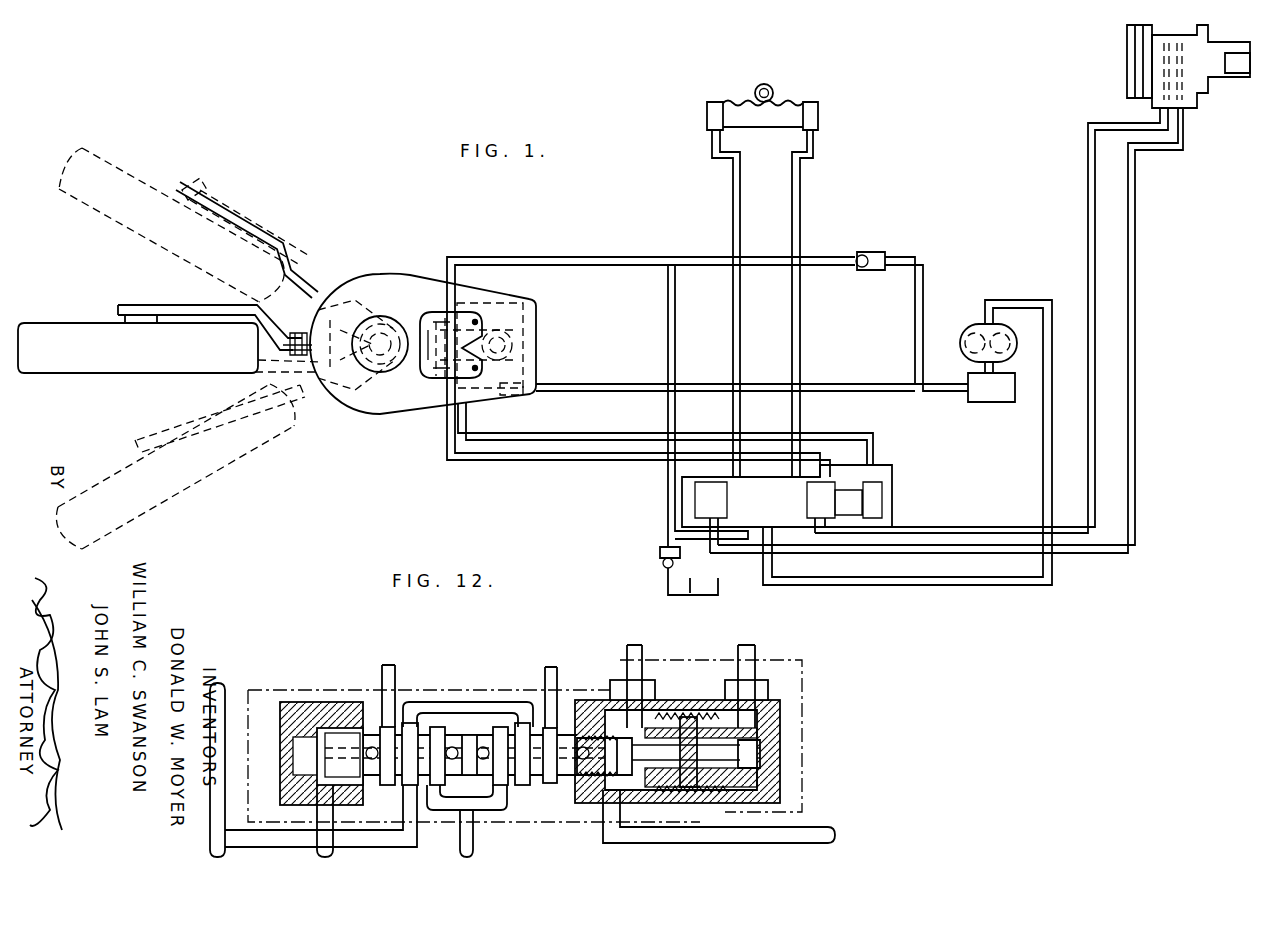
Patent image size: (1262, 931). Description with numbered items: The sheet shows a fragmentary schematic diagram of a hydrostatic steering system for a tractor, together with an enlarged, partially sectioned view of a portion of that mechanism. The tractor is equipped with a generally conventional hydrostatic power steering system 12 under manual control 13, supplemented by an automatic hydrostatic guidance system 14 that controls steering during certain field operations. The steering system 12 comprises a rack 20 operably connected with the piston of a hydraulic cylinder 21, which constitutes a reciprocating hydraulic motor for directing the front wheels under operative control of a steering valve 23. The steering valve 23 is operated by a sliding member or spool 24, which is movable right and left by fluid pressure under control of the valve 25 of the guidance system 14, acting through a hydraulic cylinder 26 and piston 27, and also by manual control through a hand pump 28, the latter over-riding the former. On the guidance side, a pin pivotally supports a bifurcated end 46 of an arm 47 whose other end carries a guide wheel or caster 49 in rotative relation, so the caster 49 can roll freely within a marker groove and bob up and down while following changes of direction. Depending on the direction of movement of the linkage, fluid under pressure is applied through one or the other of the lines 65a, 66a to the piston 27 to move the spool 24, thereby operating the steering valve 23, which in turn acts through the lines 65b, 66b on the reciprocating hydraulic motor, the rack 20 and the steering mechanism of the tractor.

In FIG. 1, the hydrostatic power steering system 12 is at (824, 176).
In FIG. 1, the manual control 13 is at (1198, 100).
In FIG. 1, the automatic hydrostatic guidance system 14 is at (360, 422).
In FIG. 1, the rack 20 is at (789, 101).
In FIG. 1, the hydraulic cylinder 21 is at (701, 120).
In FIG. 1, the steering valve 23 is at (682, 497).
In FIG. 12, the steering valve 23 is at (418, 690).
In FIG. 12, the sliding member or spool 24 is at (455, 730).
In FIG. 1, the valve 25 is at (428, 301).
In FIG. 1, the hydraulic cylinder 26 is at (882, 498).
In FIG. 12, the hydraulic cylinder 26 is at (697, 715).
In FIG. 12, the piston 27 is at (700, 797).
In FIG. 1, the hand pump 28 is at (1242, 76).
In FIG. 1, the bifurcated end 46 is at (312, 326).
In FIG. 1, the arm 47 is at (196, 305).
In FIG. 1, the guide wheel or caster 49 is at (59, 322).
In FIG. 1, the line 65a is at (479, 462).
In FIG. 12, the line 65a is at (635, 645).
In FIG. 1, the line 65b is at (733, 342).
In FIG. 12, the line 65b is at (389, 665).
In FIG. 1, the line 66a is at (507, 437).
In FIG. 12, the line 66a is at (753, 645).
In FIG. 1, the line 66b is at (800, 314).
In FIG. 12, the line 66b is at (551, 667).